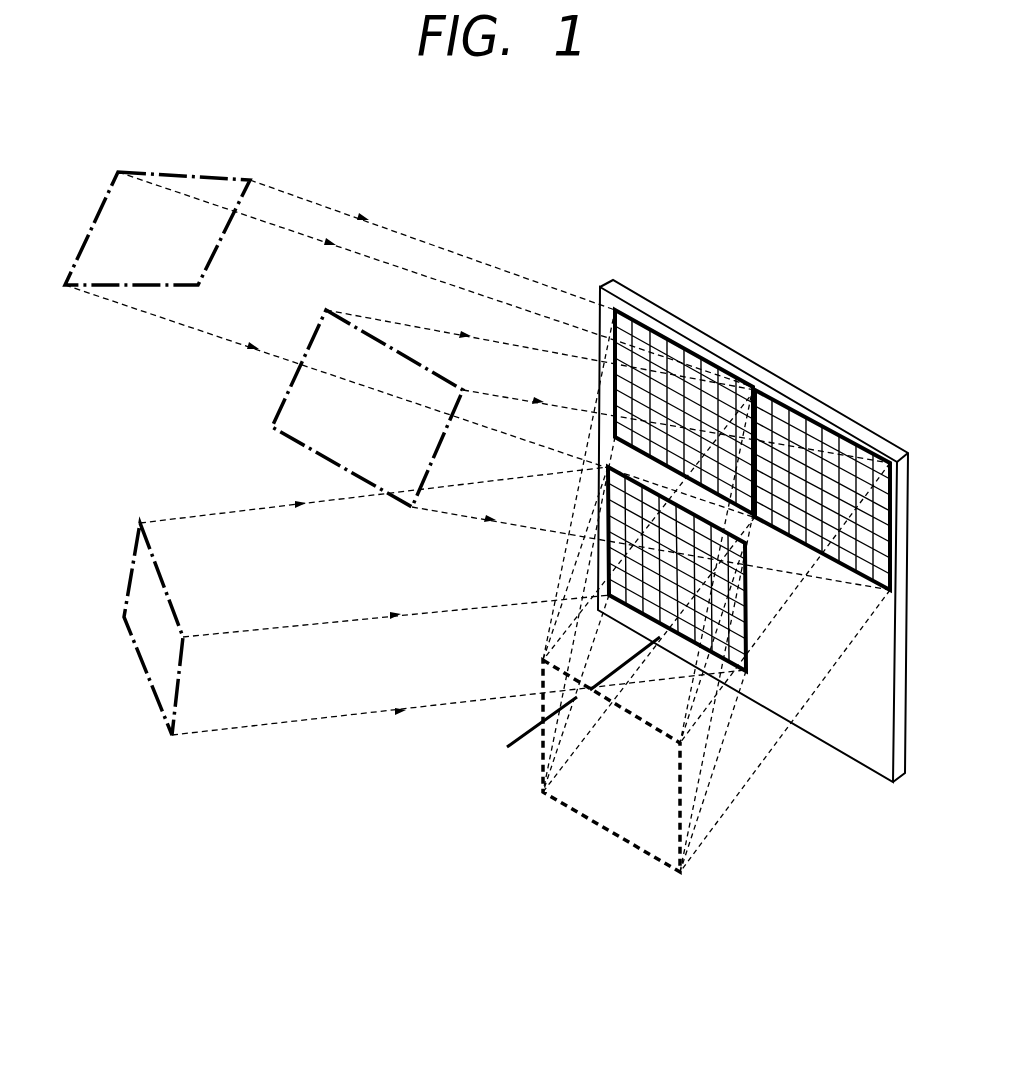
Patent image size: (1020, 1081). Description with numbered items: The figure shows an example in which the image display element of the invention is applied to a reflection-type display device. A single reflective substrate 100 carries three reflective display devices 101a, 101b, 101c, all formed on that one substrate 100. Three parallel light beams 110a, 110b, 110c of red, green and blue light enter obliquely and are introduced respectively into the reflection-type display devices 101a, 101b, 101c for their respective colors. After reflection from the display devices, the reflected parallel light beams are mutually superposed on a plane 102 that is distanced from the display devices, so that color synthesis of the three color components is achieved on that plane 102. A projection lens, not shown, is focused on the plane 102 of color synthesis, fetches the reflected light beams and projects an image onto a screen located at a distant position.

The reflective substrate 100 is at (870, 752).
The reflective display device 101a is at (713, 360).
The reflective display device 101b is at (813, 413).
The reflective display device 101c is at (753, 638).
The plane 102 is at (632, 847).
The parallel light beam 110a is at (207, 173).
The parallel light beam 110b is at (308, 338).
The parallel light beam 110c is at (195, 515).